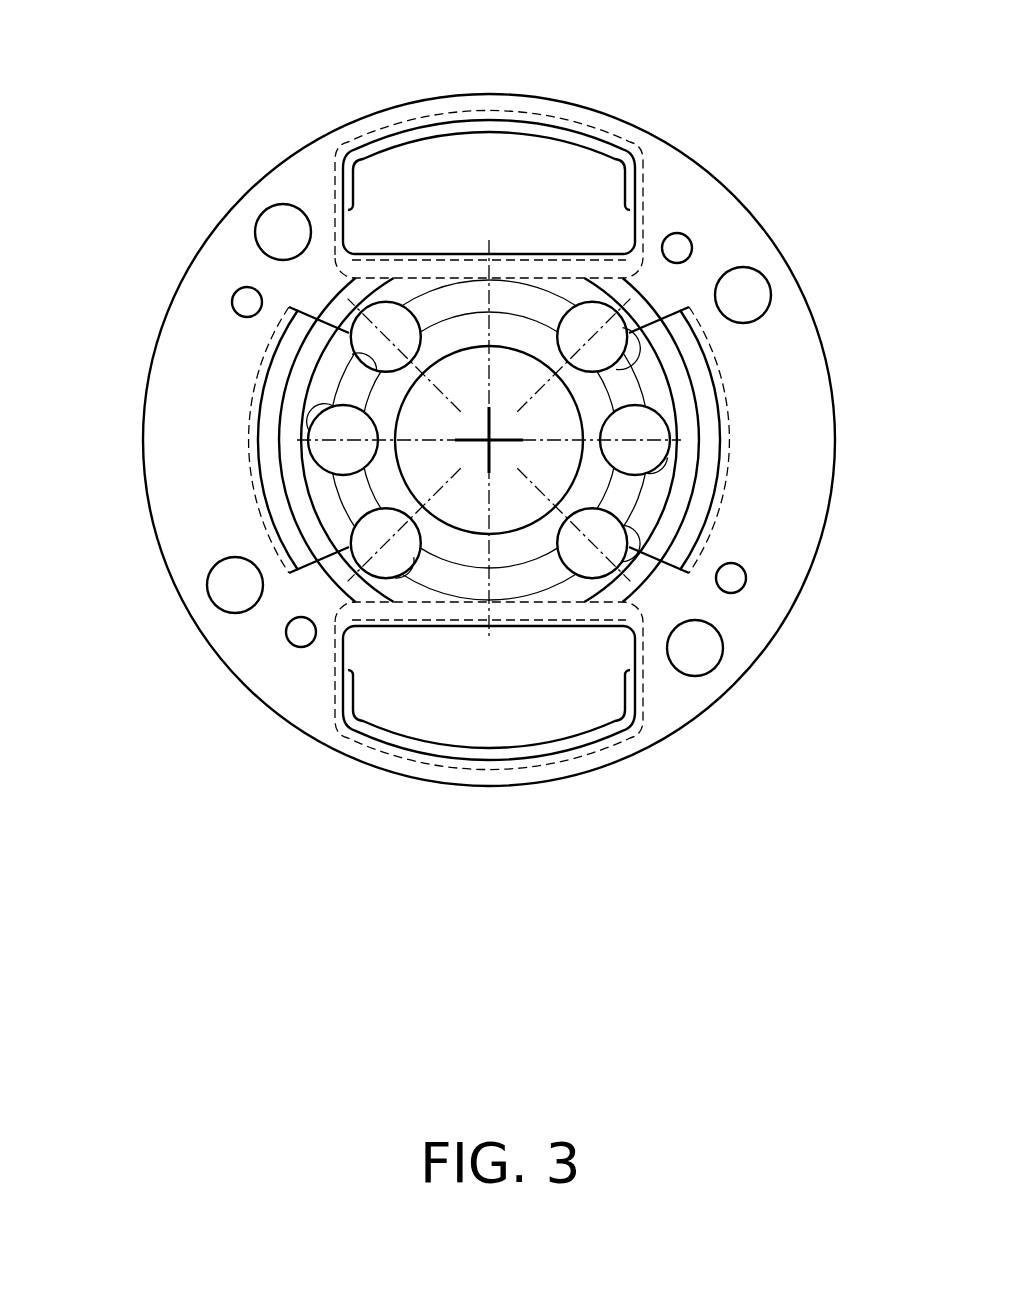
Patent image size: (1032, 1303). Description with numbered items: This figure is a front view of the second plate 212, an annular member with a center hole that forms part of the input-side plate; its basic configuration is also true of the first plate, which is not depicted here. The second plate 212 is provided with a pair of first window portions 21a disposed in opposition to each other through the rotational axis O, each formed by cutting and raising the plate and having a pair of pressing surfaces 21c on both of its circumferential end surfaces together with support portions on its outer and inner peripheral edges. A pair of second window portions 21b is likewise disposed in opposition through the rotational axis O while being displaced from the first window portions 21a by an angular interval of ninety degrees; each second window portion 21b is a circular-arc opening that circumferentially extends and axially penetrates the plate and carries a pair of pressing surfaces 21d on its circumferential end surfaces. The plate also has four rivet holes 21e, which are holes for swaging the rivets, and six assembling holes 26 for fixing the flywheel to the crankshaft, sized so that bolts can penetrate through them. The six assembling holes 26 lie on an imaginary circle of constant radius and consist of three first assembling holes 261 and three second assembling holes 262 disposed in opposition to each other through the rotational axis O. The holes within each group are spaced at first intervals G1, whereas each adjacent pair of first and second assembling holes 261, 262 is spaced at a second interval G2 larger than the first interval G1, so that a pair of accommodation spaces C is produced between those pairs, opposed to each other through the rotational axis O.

The second plate 212 is at (740, 193).
The first window portion 21a is at (518, 146).
The second window portion 21b is at (692, 413).
The pressing surface 21c is at (347, 226).
The pressing surface 21d is at (690, 333).
The rivet hole 21e is at (284, 208).
The assembling hole 26 is at (694, 446).
The first assembling hole 261 is at (344, 388).
The second assembling hole 262 is at (627, 333).
The accommodation space C is at (463, 298).
The rotational axis O is at (490, 440).
The first interval G1 is at (605, 462).
The second interval G2 is at (513, 438).